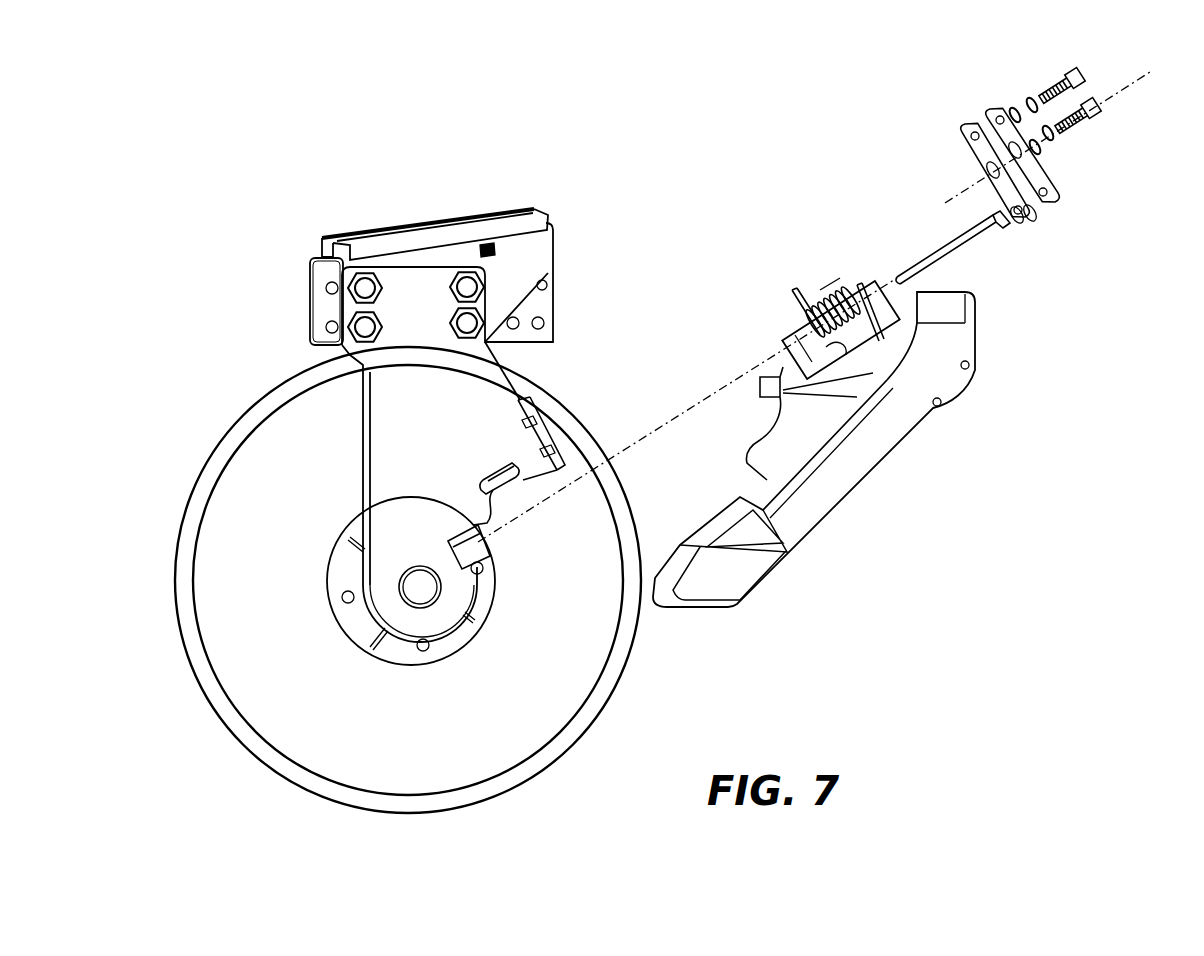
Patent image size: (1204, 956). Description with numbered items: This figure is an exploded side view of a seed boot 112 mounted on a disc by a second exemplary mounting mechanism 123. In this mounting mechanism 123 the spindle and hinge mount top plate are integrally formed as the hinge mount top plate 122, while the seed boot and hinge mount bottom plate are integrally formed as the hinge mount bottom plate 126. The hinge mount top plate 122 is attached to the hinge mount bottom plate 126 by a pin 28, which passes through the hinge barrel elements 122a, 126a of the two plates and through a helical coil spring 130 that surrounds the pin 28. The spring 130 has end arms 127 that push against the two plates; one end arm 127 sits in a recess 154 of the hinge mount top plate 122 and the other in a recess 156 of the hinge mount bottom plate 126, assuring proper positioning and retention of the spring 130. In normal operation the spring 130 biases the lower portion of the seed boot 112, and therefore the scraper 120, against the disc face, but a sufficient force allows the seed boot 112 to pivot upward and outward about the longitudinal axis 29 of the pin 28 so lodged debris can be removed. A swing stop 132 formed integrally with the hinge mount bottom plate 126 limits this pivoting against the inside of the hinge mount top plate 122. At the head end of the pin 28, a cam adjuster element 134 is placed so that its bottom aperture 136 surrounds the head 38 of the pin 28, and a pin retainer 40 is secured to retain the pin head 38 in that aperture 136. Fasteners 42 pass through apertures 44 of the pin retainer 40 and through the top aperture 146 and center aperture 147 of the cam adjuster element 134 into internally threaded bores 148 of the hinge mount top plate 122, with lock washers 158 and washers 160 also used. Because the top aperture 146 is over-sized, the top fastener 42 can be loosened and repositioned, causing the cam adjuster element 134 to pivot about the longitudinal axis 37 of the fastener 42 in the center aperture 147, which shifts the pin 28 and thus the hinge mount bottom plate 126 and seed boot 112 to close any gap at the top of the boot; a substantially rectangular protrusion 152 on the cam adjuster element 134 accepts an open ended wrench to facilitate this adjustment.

The pin 28 is at (952, 243).
The longitudinal axis 29 is at (643, 438).
The longitudinal axis 37 is at (1133, 83).
The head 38 is at (1003, 225).
The pin retainer 40 is at (1050, 198).
The fasteners 42 is at (1097, 100).
The apertures 44 is at (1000, 128).
The seed boot 112 is at (878, 432).
The scraper 120 is at (790, 552).
The hinge mount top plate 122 is at (421, 423).
The hinge barrel element 122a is at (488, 536).
The mounting mechanism 123 is at (835, 212).
The hinge mount bottom plate 126 is at (790, 419).
The hinge barrel element 126a is at (790, 333).
The end arms 127 is at (790, 292).
The helical coil spring 130 is at (827, 298).
The swing stop 132 is at (760, 405).
The cam adjuster element 134 is at (1033, 236).
The bottom aperture 136 is at (1017, 222).
The top aperture 146 is at (972, 147).
The center aperture 147 is at (985, 173).
The internally threaded bores 148 is at (547, 455).
The protrusion 152 is at (1035, 216).
The recess 154 is at (483, 474).
The recess 156 is at (846, 344).
The lock washers 158 is at (1029, 98).
The washers 160 is at (1012, 102).